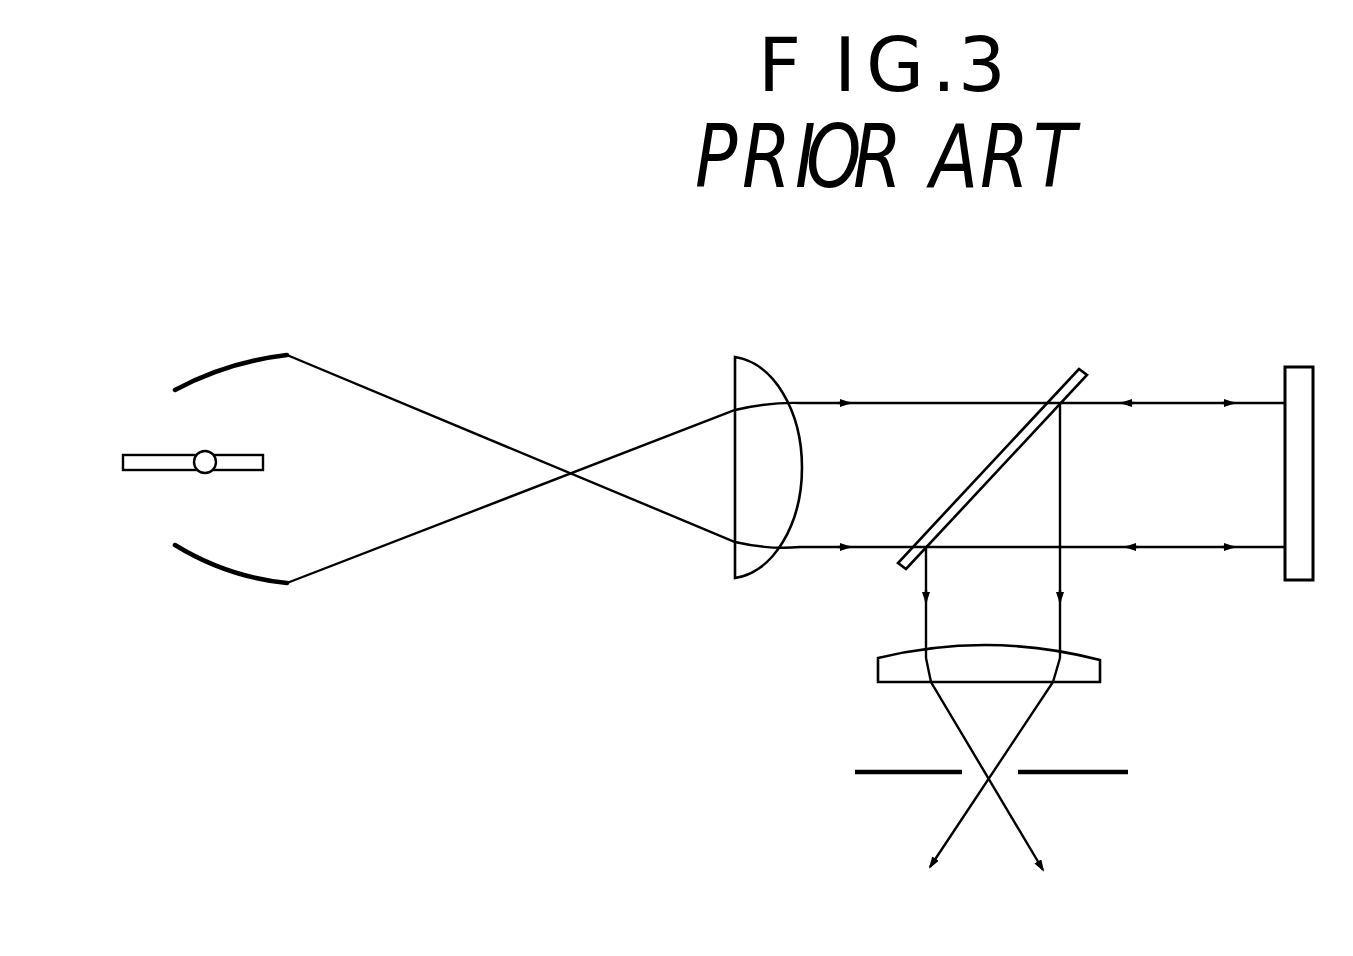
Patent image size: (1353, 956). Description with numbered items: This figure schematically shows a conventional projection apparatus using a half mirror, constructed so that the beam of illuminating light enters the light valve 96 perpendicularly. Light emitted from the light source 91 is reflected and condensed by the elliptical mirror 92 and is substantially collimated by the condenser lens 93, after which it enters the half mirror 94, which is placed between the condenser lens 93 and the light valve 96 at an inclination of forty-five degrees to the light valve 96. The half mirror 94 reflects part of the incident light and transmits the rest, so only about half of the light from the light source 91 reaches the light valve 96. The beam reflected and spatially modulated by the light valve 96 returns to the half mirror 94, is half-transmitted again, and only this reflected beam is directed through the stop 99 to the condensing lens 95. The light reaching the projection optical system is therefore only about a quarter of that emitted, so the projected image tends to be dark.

The light source 91 is at (263, 453).
The elliptical mirror 92 is at (222, 371).
The condenser lens 93 is at (768, 378).
The half mirror 94 is at (972, 477).
The condensing lens 95 is at (1080, 668).
The light valve 96 is at (1302, 367).
The stop 99 is at (1087, 777).